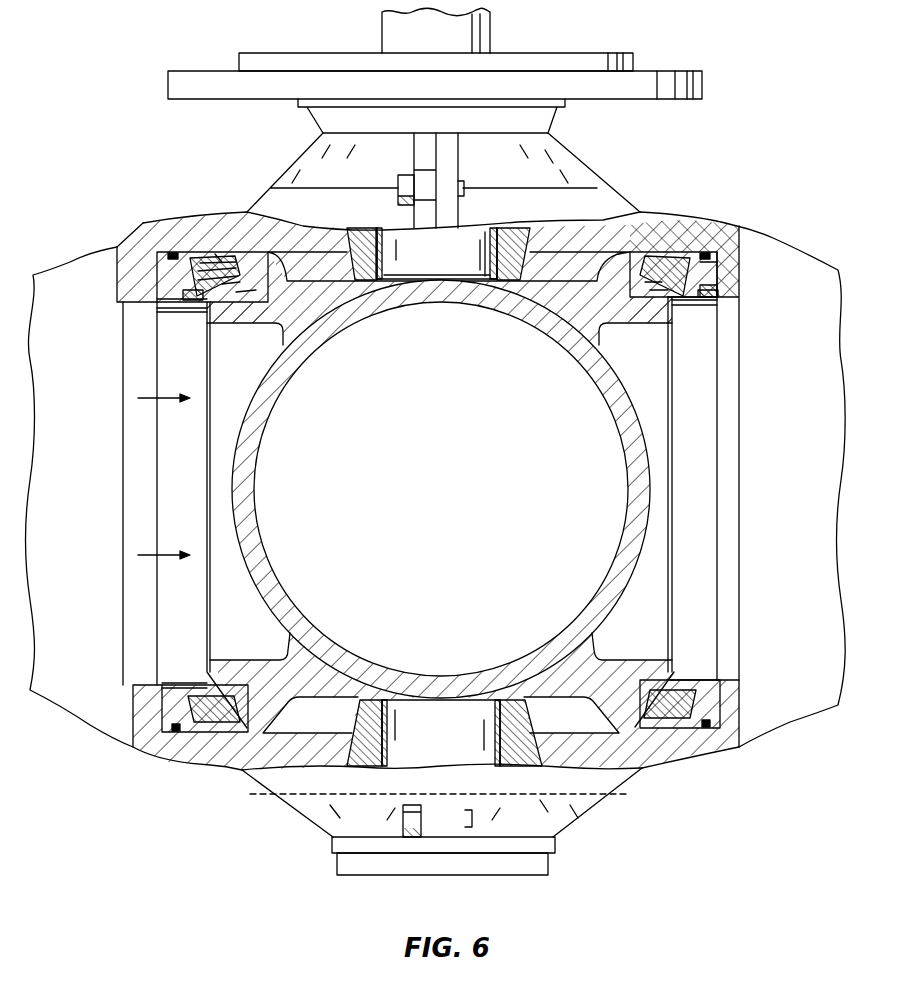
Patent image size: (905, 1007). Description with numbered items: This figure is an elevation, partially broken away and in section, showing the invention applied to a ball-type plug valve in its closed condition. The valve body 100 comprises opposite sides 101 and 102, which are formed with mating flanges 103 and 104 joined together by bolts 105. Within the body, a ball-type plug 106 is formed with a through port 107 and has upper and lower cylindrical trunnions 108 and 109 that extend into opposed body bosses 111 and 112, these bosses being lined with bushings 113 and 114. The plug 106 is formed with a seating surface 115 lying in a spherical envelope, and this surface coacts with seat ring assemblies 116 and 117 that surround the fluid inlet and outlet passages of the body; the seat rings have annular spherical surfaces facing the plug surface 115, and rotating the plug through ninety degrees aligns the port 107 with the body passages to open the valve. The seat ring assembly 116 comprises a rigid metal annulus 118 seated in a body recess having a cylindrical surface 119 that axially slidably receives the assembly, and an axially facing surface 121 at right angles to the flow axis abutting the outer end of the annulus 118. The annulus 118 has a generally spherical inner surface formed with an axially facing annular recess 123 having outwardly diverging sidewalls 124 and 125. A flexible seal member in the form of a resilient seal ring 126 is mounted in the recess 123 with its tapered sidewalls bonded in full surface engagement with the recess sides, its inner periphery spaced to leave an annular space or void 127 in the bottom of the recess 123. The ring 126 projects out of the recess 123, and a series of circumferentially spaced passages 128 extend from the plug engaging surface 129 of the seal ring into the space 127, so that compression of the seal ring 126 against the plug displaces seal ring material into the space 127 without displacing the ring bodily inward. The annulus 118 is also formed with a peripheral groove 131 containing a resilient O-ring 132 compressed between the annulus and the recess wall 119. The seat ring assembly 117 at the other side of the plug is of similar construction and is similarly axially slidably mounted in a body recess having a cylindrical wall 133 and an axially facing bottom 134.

The valve body 100 is at (641, 222).
The side of valve body 101 is at (168, 232).
The side of valve body 102 is at (745, 252).
The mating flange 103 is at (413, 212).
The mating flange 104 is at (460, 162).
The bolts 105 is at (403, 178).
The ball-type plug 106 is at (634, 463).
The through port 107 is at (520, 318).
The upper cylindrical trunnion 108 is at (493, 234).
The lower cylindrical trunnion 109 is at (484, 760).
The body boss 111 is at (522, 241).
The body boss 112 is at (520, 718).
The bushing 113 is at (490, 246).
The bushing 114 is at (388, 742).
The seating surface 115 is at (206, 675).
The seat ring assembly 116 is at (157, 306).
The seat ring assembly 117 is at (722, 303).
The rigid metal annulus 118 is at (183, 255).
The cylindrical surface 119 is at (238, 262).
The axially facing surface 121 is at (163, 272).
The annular recess 123 is at (187, 300).
The sidewall 124 is at (250, 266).
The sidewall 125 is at (212, 325).
The resilient seal ring 126 is at (222, 300).
The annular space 127 is at (214, 250).
The passages 128 is at (236, 280).
The plug engaging surface 129 is at (262, 289).
The peripheral groove 131 is at (168, 726).
The O-ring 132 is at (176, 732).
The cylindrical wall 133 is at (684, 240).
The axially facing bottom 134 is at (718, 290).